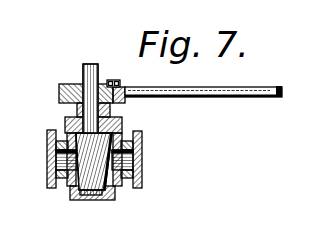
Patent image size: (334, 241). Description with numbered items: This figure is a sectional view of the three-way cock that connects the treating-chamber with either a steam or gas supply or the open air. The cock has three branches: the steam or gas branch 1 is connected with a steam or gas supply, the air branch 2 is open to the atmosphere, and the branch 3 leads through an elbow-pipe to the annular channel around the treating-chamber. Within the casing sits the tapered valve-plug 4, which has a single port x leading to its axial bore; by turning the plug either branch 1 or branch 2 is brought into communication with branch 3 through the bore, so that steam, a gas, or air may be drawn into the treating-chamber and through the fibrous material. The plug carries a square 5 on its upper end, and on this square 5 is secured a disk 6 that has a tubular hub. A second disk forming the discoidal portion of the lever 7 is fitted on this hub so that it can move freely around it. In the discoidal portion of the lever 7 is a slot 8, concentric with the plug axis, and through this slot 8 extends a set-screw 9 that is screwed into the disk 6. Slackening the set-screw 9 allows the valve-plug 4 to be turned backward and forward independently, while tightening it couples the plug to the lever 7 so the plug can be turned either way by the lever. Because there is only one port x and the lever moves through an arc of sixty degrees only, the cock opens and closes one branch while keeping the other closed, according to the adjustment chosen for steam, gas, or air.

The port x is at (47, 142).
The steam or gas branch 1 is at (48, 162).
The air branch 2 is at (137, 158).
The steam or gas branch to treating-chamber 3 is at (92, 199).
The valve-plug 4 is at (117, 180).
The square 5 is at (87, 77).
The disk 6 is at (120, 108).
The lever 7 is at (228, 88).
The slot 8 is at (121, 89).
The set-screw 9 is at (113, 81).